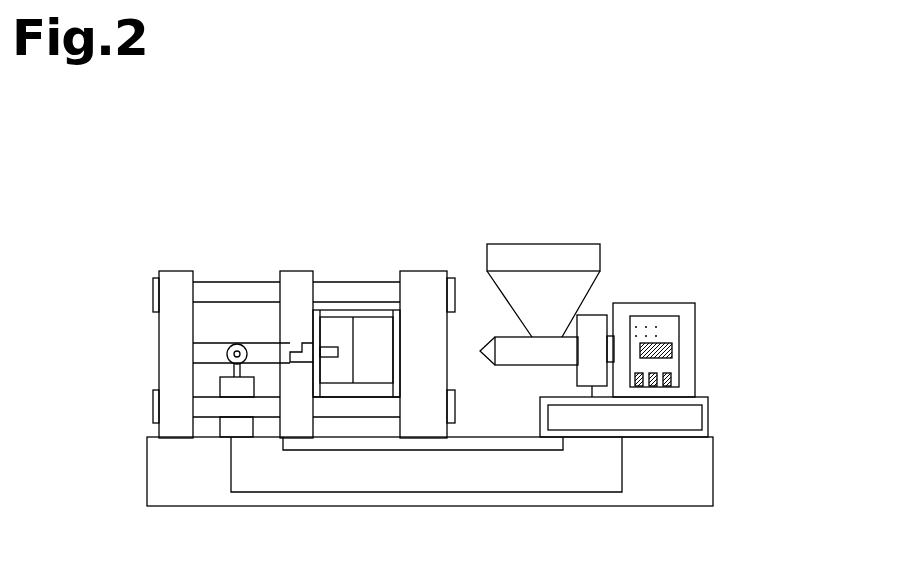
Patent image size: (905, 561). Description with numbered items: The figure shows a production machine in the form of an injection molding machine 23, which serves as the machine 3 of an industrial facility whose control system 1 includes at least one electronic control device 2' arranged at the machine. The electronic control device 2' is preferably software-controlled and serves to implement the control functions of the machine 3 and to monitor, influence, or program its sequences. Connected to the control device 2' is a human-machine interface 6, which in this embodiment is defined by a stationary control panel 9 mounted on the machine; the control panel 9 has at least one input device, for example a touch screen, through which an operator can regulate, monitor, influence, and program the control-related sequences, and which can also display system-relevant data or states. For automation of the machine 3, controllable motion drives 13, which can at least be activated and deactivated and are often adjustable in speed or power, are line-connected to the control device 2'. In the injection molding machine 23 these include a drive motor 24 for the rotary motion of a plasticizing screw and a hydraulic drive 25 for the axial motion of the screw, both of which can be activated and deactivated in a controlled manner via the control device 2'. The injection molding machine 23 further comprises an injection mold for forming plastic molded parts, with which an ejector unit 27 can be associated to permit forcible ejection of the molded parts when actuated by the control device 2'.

The control system 1 is at (663, 233).
The machine 3 is at (455, 207).
The motion drive 13 is at (292, 338).
The ejector unit 27 is at (303, 347).
The drive motor 24 is at (596, 325).
The hydraulic drive 25 is at (607, 340).
The human-machine interface 6 is at (680, 297).
The control panel 9 is at (693, 318).
The electronic control device 2' is at (624, 479).
The injection molding machine 23 is at (690, 498).